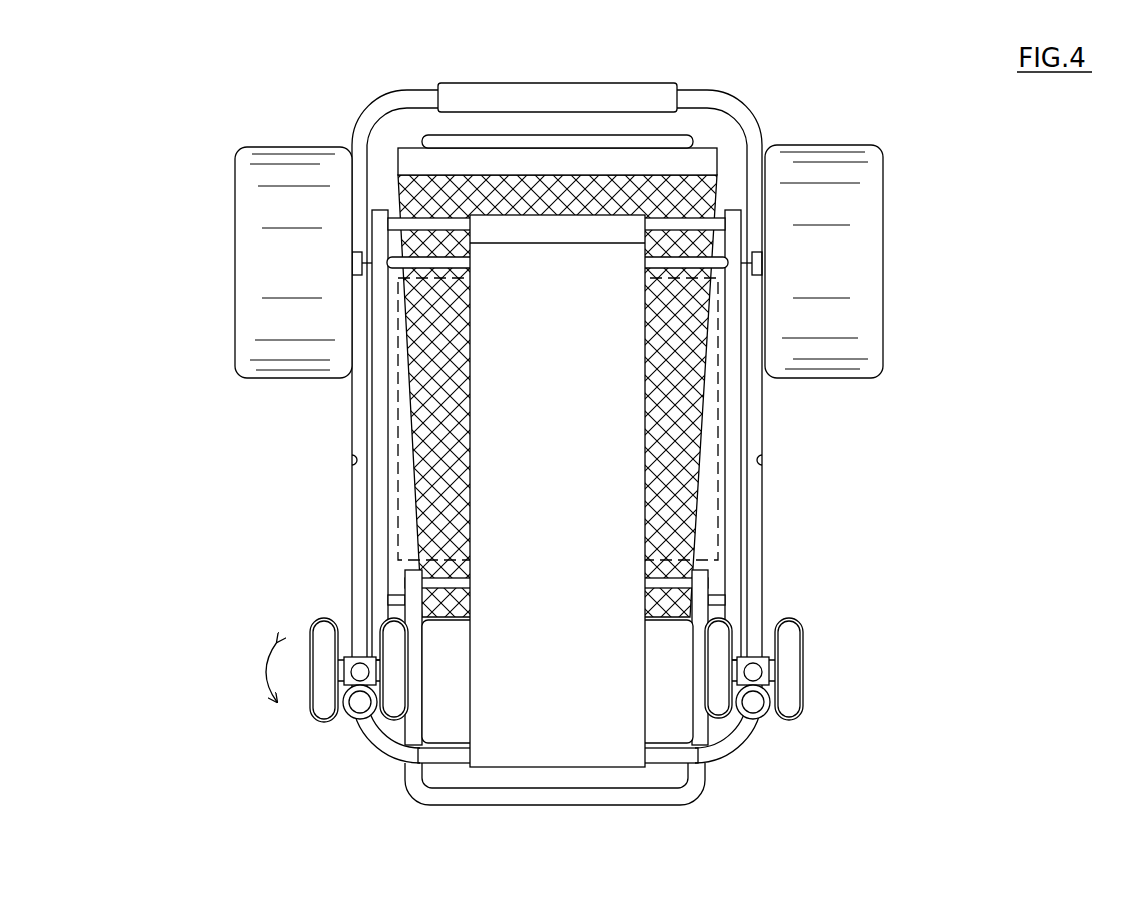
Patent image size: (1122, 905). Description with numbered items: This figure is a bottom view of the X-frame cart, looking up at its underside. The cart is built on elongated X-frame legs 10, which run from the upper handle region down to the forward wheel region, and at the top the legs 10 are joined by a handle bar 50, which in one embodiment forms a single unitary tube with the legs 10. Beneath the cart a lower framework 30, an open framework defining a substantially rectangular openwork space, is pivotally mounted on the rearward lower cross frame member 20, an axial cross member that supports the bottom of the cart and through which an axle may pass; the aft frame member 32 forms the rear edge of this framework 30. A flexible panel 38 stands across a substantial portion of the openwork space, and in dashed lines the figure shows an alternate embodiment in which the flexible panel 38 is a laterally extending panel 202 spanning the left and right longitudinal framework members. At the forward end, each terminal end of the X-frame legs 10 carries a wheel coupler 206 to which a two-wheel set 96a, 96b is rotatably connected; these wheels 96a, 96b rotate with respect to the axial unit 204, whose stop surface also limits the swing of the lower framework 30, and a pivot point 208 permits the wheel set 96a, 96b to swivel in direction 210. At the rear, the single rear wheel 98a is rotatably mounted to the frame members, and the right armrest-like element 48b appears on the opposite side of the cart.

The first elongated X-frame leg 10 is at (352, 515).
The rearward lower cross frame member 20 is at (712, 262).
The lower framework 30 is at (722, 752).
The aft frame member 32 is at (688, 217).
The flexible panel 38 is at (647, 447).
The right armrest 48b is at (880, 312).
The handle bar 50 is at (725, 92).
The forward wheel 96a is at (317, 721).
The forward wheel 96b is at (388, 722).
The left rear wheel 98a is at (275, 380).
The laterally extending panel 202 is at (555, 555).
The axial unit 204 is at (347, 657).
The wheel coupler 206 is at (355, 718).
The pivot point 208 is at (370, 657).
The rotation direction 210 is at (262, 670).